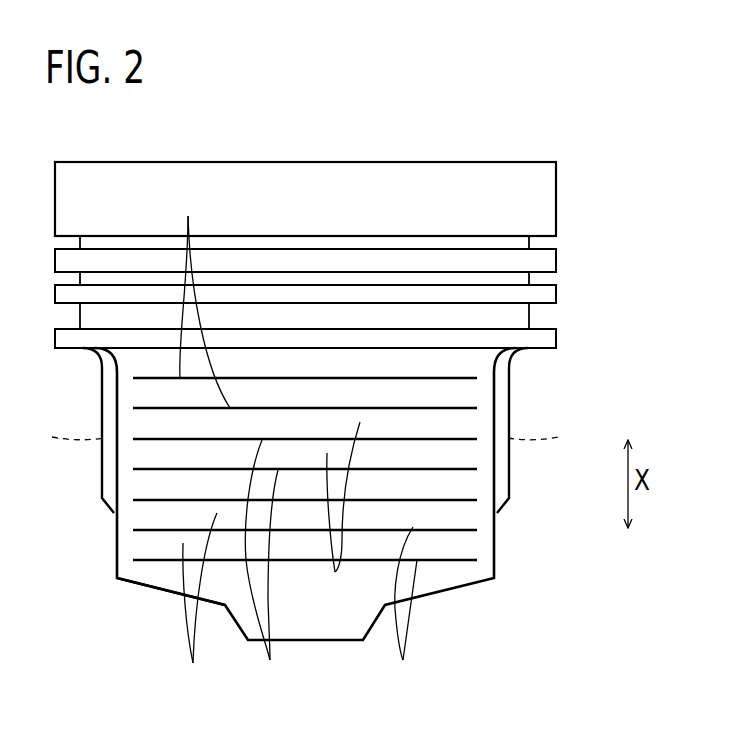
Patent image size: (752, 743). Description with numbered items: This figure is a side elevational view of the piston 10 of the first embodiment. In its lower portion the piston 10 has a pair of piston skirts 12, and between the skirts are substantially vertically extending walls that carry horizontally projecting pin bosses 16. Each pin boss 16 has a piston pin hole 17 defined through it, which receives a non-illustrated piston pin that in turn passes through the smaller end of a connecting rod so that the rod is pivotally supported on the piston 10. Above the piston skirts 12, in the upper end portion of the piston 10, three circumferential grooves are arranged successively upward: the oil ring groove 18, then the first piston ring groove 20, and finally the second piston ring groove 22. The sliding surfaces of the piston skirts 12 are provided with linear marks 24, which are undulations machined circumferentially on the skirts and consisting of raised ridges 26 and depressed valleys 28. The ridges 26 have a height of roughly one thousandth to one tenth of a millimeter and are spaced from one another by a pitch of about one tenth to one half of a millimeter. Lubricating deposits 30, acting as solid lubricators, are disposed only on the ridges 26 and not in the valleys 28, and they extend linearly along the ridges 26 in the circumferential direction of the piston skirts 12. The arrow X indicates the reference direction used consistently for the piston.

The piston 10 is at (200, 127).
The piston skirt 12 is at (128, 572).
The pin boss 16 is at (108, 481).
The piston pin hole 17 is at (305, 437).
The oil ring groove 18 is at (541, 301).
The first piston ring groove 20 is at (467, 275).
The second piston ring groove 22 is at (434, 239).
The linear mark 24 is at (336, 373).
The ridge 26 is at (313, 443).
The valley 28 is at (269, 561).
The lubricating deposit 30 is at (298, 438).